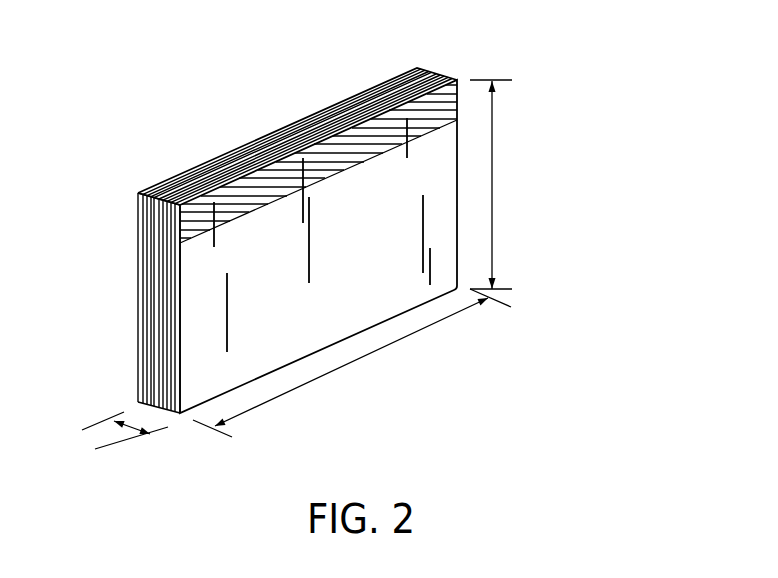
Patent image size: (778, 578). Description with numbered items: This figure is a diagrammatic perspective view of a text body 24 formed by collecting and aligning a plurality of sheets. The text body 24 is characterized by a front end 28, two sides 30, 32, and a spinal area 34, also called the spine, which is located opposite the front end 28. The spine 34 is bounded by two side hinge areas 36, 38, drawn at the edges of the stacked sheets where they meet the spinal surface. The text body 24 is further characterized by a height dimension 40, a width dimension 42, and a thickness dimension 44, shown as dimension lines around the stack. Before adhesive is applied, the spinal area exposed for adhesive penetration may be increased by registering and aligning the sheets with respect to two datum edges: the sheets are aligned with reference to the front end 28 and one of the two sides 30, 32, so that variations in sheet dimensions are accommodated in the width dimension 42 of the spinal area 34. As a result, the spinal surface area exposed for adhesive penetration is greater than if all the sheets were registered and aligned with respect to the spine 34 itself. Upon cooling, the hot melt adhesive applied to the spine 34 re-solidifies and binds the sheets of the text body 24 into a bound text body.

The text body 24 is at (607, 64).
The front end 28 is at (182, 415).
The side 30 is at (157, 297).
The side 32 is at (443, 78).
The spinal area 34 is at (307, 127).
The side hinge area 36 is at (244, 210).
The side hinge area 38 is at (178, 177).
The height dimension 40 is at (371, 356).
The width dimension 42 is at (493, 172).
The thickness dimension 44 is at (115, 441).